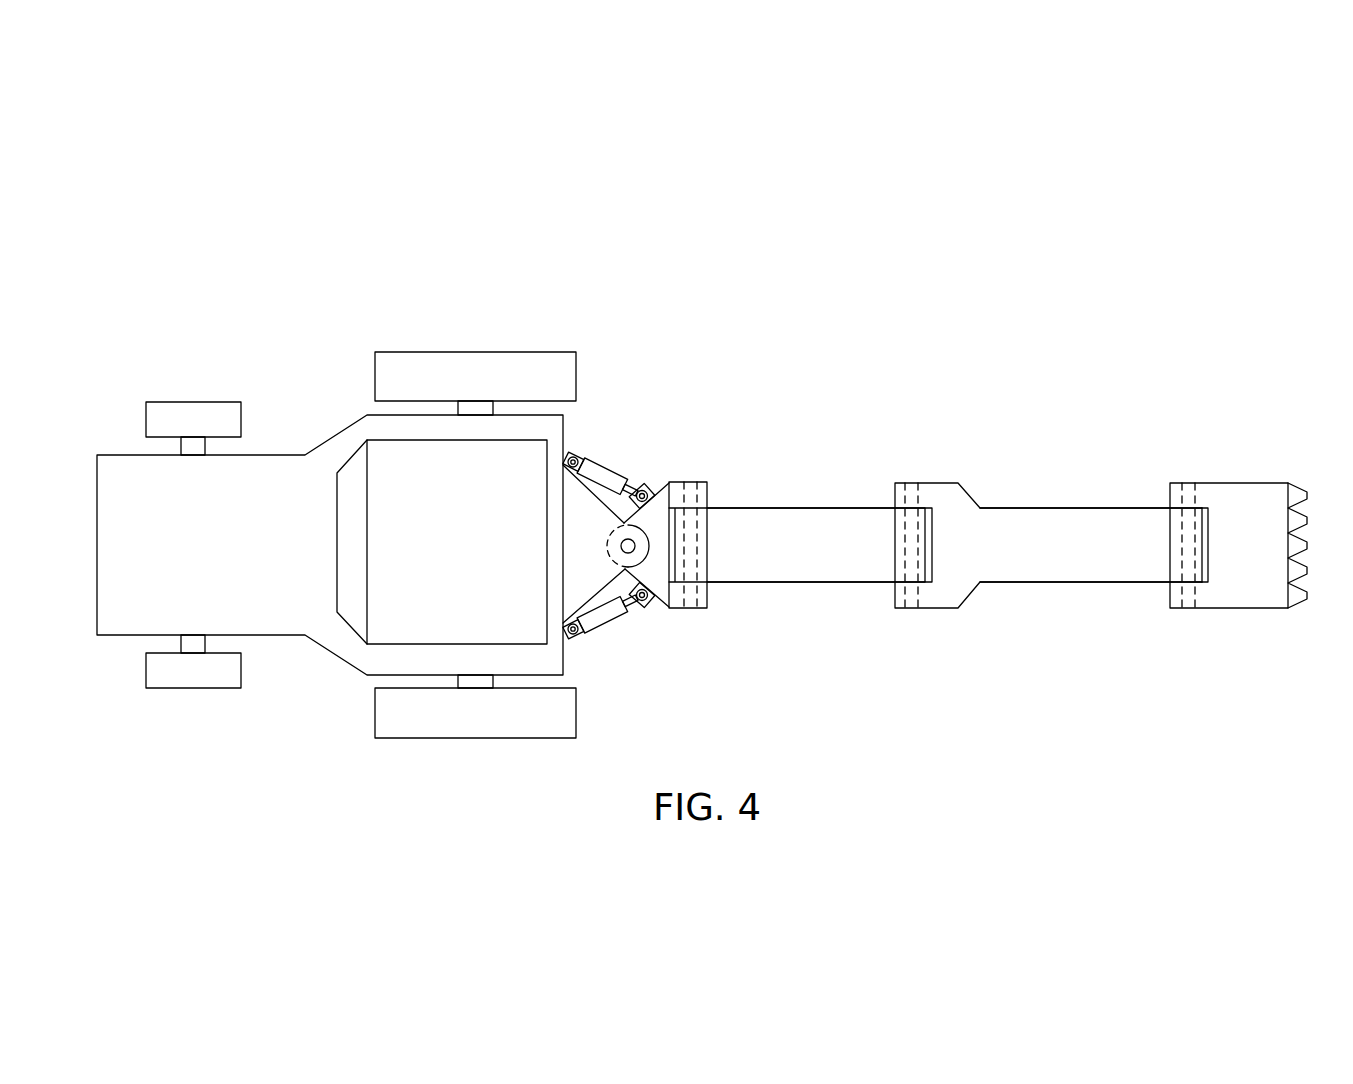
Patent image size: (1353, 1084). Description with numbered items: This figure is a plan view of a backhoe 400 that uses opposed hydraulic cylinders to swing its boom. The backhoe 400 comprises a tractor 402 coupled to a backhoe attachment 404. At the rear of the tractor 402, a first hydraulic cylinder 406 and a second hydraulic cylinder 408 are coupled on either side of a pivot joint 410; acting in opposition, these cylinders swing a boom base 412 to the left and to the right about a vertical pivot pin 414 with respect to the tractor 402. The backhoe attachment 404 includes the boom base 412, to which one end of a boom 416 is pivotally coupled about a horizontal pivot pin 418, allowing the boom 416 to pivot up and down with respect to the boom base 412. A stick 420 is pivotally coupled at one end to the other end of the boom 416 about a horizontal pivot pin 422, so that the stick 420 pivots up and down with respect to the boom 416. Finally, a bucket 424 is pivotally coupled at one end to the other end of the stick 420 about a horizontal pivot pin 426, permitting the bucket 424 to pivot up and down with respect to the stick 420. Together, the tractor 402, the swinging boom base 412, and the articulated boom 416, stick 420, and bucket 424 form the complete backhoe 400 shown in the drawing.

The backhoe 400 is at (762, 232).
The tractor 402 is at (312, 338).
The backhoe attachment 404 is at (1031, 360).
The first hydraulic cylinder 406 is at (601, 457).
The second hydraulic cylinder 408 is at (607, 625).
The pivot joint 410 is at (623, 518).
The boom base 412 is at (657, 555).
The vertical pivot pin 414 is at (610, 557).
The boom 416 is at (793, 508).
The horizontal pivot pin 418 is at (702, 541).
The stick 420 is at (1050, 508).
The horizontal pivot pin 422 is at (905, 550).
The bucket 424 is at (1237, 481).
The horizontal pivot pin 426 is at (1180, 557).